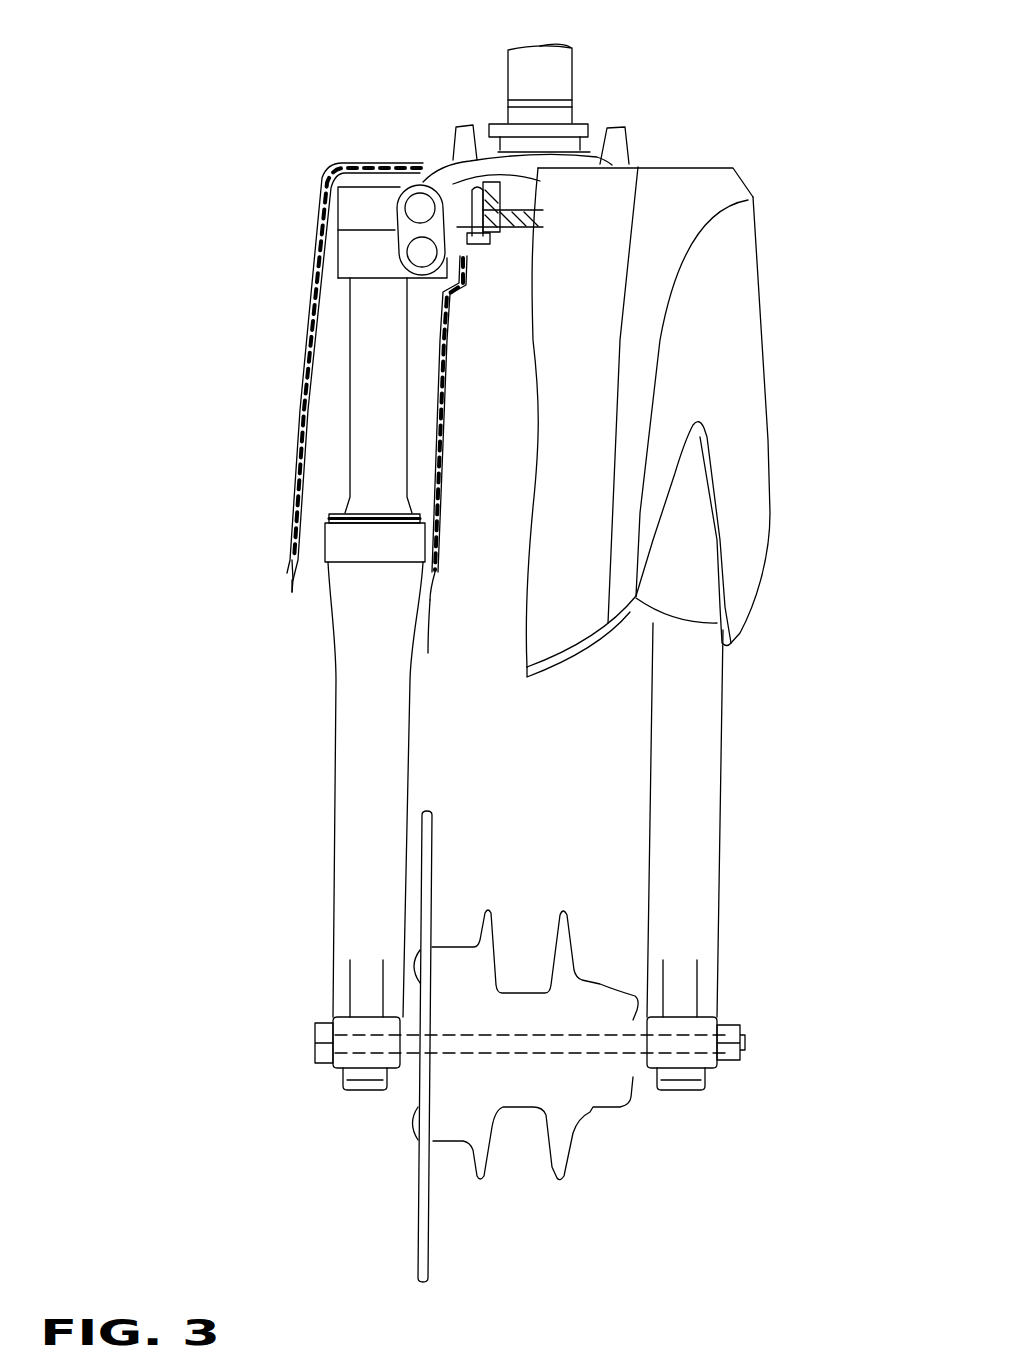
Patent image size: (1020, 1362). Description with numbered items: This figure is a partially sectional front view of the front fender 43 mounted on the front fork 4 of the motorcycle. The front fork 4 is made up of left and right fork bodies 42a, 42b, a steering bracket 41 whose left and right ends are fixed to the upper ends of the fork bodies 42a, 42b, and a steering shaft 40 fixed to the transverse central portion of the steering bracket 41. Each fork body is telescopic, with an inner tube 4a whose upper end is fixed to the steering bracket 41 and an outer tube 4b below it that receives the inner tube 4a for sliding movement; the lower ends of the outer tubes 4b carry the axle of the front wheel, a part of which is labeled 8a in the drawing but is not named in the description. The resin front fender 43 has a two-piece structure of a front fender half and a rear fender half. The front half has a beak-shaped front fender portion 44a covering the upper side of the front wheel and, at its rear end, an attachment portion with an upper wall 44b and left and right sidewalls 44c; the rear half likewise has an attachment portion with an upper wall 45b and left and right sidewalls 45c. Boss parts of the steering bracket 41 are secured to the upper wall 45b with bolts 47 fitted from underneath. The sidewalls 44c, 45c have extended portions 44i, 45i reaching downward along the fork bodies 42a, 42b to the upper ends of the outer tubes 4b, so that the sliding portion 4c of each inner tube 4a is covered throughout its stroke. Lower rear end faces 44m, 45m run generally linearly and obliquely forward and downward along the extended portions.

The front fork 4 is at (224, 805).
The inner tube 4a is at (352, 449).
The outer tube 4b is at (334, 822).
The sliding portion 4c is at (357, 481).
The front wheel hub 8a is at (603, 1057).
The steering shaft 40 is at (573, 62).
The steering bracket 41 is at (593, 147).
The fork body 42a is at (733, 722).
The fork body 42b is at (501, 684).
The front fender 43 is at (685, 445).
The front fender portion 44a is at (600, 660).
The upper wall 44b is at (516, 369).
The sidewall 44c is at (310, 277).
The extended portion 44i is at (300, 523).
The lower rear end face 44m is at (293, 591).
The upper wall 45b is at (520, 236).
The sidewall 45c is at (635, 472).
The extended portion 45i is at (437, 537).
The lower rear end face 45m is at (464, 644).
The bolt 47 is at (466, 262).